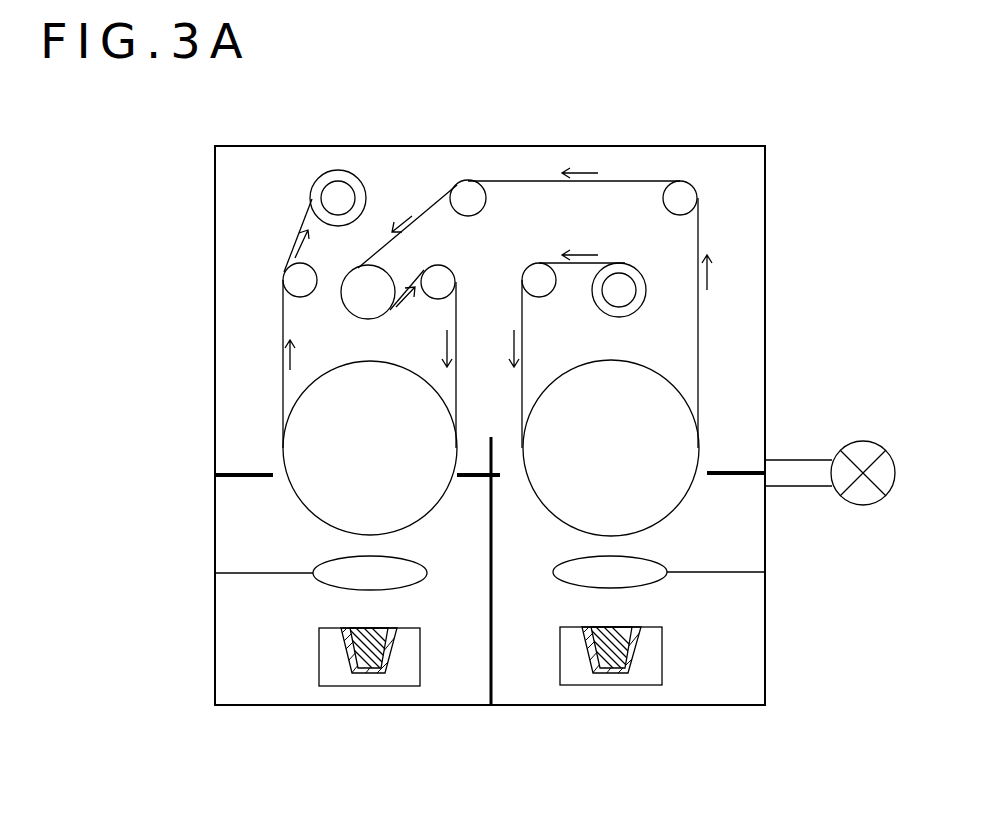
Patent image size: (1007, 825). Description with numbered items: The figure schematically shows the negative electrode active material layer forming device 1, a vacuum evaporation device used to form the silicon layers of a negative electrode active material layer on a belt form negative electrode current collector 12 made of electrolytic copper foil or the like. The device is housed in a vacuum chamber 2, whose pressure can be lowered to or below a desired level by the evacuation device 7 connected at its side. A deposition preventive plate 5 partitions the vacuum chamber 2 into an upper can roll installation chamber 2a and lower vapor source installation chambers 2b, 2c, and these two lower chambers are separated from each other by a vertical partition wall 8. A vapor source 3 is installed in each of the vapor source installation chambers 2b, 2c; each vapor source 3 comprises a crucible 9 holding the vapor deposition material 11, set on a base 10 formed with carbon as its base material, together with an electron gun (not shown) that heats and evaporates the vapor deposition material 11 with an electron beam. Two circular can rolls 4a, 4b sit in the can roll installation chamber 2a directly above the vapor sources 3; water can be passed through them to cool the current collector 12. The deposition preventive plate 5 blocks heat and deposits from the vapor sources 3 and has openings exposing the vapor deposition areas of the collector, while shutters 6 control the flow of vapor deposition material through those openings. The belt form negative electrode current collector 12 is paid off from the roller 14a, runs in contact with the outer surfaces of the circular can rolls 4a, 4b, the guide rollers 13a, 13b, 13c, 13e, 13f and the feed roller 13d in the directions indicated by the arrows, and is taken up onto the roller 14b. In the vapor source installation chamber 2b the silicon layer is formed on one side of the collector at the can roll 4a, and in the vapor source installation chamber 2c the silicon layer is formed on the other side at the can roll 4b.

The negative electrode active material layer forming device 1 is at (740, 137).
The vacuum chamber 2 is at (767, 212).
The can roll installation chamber 2a is at (740, 372).
The vapor source installation chamber 2b is at (740, 653).
The vapor source installation chamber 2c is at (243, 655).
The vapor source 3 is at (548, 711).
The circular can roll 4a is at (676, 486).
The circular can roll 4b is at (307, 486).
The deposition preventive plate 5 is at (216, 474).
The shutter 6 is at (337, 578).
The evacuation device 7 is at (799, 472).
The partition wall 8 is at (495, 613).
The crucible 9 is at (391, 668).
The base 10 is at (416, 665).
The vapor deposition material 11 is at (387, 672).
The belt form negative electrode current collector 12 is at (300, 228).
The guide roller 13a is at (540, 273).
The guide roller 13b is at (685, 190).
The guide roller 13c is at (470, 182).
The feed roller 13d is at (368, 275).
The guide roller 13e is at (437, 267).
The guide roller 13f is at (290, 283).
The roller 14a is at (647, 295).
The roller 14b is at (335, 172).